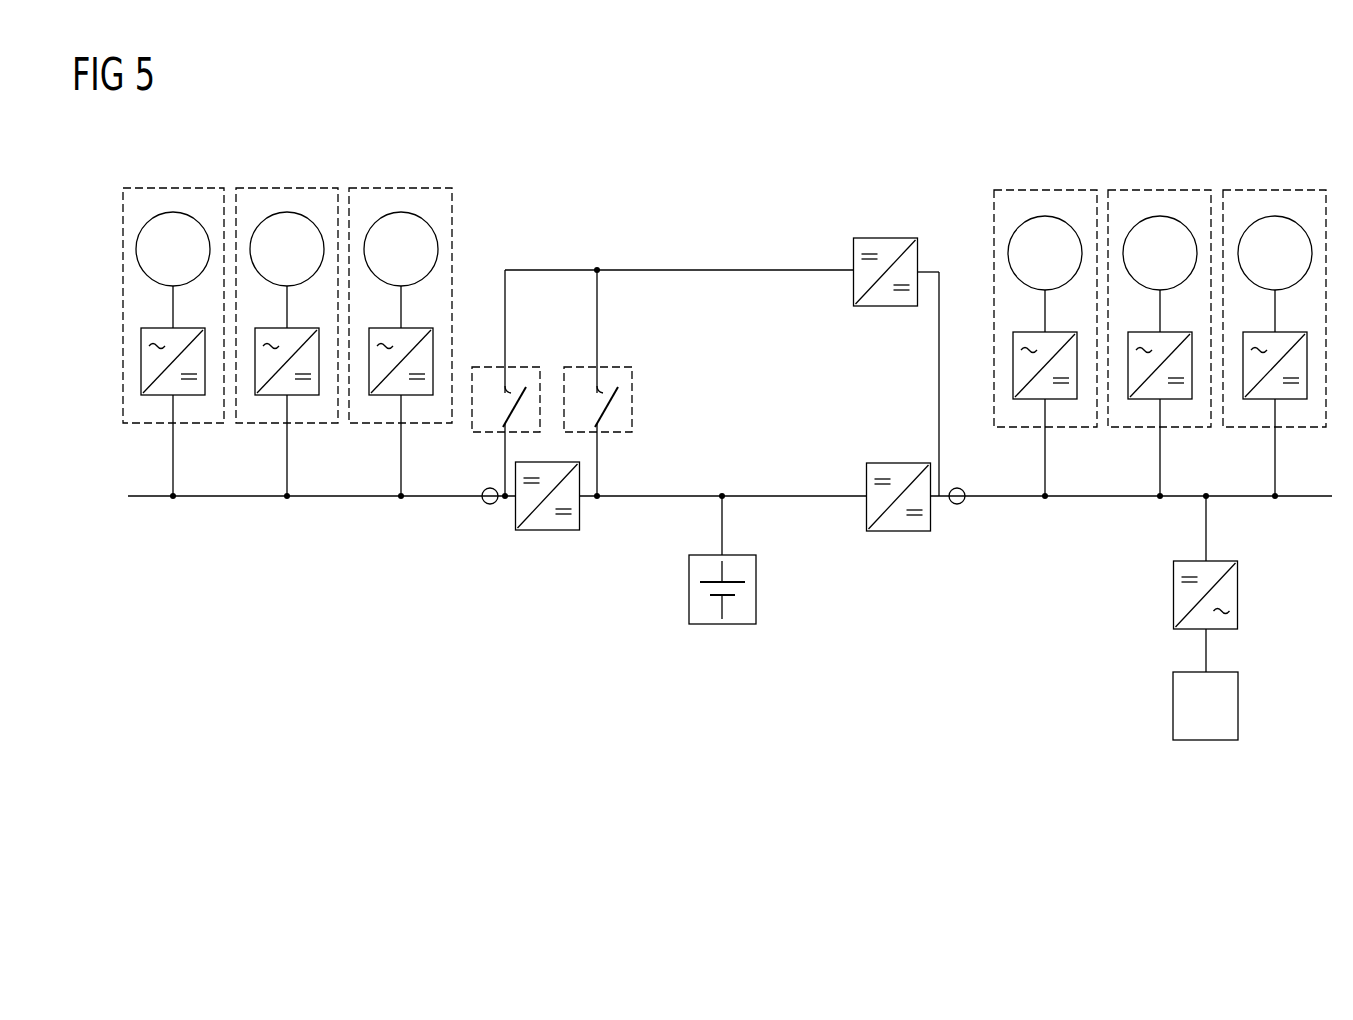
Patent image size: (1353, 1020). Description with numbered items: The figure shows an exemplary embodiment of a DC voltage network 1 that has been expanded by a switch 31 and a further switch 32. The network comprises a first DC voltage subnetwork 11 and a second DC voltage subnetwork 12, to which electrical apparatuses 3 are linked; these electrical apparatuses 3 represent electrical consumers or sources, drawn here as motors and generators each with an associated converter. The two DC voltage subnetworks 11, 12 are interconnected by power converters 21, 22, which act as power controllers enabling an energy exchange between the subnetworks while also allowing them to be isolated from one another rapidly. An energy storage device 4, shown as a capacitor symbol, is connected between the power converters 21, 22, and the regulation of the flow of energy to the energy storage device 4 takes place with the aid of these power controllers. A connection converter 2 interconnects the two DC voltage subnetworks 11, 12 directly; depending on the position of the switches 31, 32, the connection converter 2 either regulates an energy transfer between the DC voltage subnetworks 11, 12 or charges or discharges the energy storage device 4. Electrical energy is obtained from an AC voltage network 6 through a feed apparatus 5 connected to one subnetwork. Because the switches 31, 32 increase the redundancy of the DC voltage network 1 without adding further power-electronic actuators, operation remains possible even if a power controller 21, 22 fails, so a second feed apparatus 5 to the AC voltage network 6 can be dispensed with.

The DC voltage network 1 is at (939, 136).
The connection converter 2 is at (887, 238).
The electrical apparatus 3 is at (173, 188).
The energy storage device 4 is at (723, 625).
The feed apparatus 5 is at (1240, 591).
The AC voltage network 6 is at (1206, 741).
The first DC voltage subnetwork 11 is at (490, 505).
The second DC voltage subnetwork 12 is at (957, 505).
The power converter 21 is at (546, 531).
The power converter 22 is at (897, 463).
The switch 31 is at (523, 367).
The further switch 32 is at (618, 367).